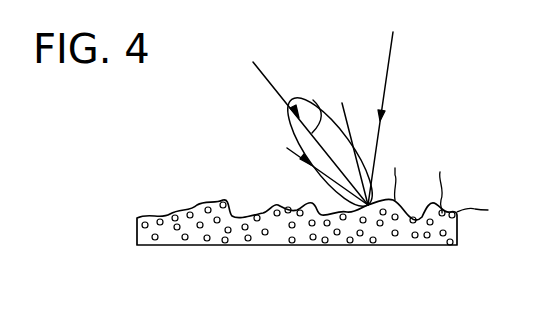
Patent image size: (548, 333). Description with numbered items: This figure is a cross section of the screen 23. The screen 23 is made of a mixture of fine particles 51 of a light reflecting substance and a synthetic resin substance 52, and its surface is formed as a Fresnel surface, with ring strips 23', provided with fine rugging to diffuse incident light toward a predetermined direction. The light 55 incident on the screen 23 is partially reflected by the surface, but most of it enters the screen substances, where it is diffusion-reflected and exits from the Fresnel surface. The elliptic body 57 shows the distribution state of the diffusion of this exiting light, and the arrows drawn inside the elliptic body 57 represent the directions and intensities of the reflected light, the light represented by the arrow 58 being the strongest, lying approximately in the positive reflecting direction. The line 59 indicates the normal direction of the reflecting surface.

The screen 23 is at (297, 221).
The ring strips 23' is at (399, 172).
The fine particles 51 is at (442, 181).
The synthetic resin substance 52 is at (487, 212).
The incident light 55 is at (390, 75).
The elliptic body 57 is at (283, 131).
The arrow 58 is at (312, 107).
The normal direction 59 is at (342, 103).